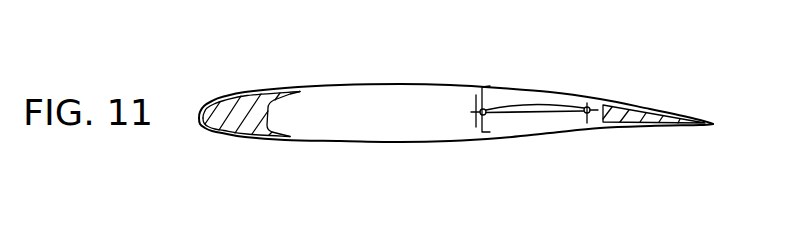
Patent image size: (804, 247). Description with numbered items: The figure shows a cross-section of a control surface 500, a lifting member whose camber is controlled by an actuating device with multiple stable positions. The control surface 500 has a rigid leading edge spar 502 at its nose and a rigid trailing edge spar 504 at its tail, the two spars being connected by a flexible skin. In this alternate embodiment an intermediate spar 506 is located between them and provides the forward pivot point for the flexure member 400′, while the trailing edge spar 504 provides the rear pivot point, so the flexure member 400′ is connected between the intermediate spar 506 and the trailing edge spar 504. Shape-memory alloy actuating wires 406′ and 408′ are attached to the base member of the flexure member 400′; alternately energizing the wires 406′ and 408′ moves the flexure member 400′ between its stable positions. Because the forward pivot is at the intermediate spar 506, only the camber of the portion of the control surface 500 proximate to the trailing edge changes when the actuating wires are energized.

The control surface 500 is at (361, 74).
The rigid leading edge spar 502 is at (238, 113).
The rigid trailing edge spar 504 is at (647, 108).
The intermediate spar 506 is at (478, 92).
The flexure member 400′ is at (552, 103).
The shape-memory alloy actuating wire 406′ is at (525, 102).
The shape-memory alloy actuating wire 408′ is at (531, 113).